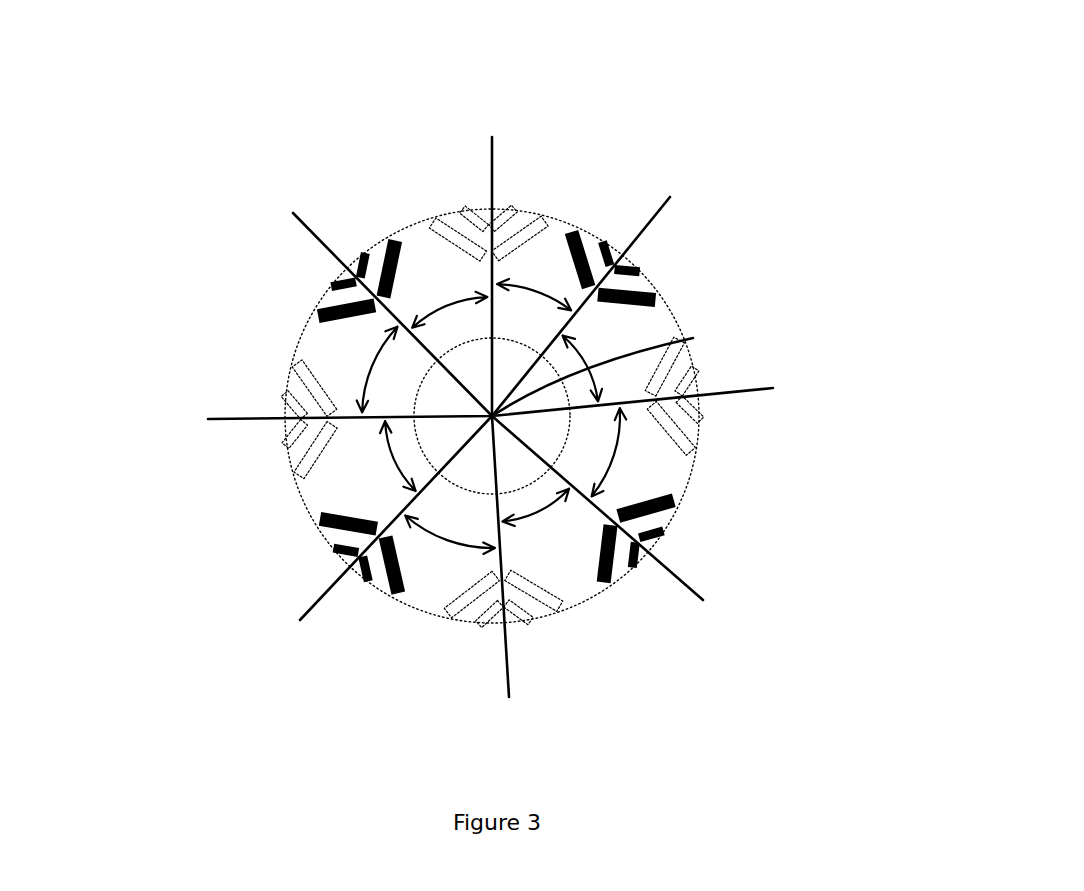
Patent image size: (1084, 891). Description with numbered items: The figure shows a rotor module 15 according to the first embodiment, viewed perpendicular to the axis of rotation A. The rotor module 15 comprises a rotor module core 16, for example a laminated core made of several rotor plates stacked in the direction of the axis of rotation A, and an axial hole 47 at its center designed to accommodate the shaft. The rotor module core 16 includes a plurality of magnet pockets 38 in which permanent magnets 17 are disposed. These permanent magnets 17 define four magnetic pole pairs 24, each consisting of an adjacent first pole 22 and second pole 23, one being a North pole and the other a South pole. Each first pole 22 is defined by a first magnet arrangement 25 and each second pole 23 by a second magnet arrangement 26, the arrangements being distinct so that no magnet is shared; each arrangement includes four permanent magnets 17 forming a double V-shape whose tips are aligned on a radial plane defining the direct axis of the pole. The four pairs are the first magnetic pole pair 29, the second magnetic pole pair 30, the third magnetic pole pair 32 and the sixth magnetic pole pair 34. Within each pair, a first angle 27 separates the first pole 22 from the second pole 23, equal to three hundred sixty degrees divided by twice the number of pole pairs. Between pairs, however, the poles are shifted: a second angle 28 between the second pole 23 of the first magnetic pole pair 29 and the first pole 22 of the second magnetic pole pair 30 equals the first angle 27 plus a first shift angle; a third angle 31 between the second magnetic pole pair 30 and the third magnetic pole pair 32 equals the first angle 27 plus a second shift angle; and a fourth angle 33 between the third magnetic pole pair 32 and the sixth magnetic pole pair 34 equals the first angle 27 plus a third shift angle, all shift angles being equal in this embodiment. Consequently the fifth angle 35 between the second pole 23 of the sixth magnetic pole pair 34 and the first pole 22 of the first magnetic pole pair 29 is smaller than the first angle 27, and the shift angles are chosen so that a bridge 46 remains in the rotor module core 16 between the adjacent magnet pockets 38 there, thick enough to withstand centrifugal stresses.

The rotor module 15 is at (247, 132).
The rotor module core 16 is at (647, 434).
The permanent magnets 17 is at (312, 318).
The first pole 22 is at (508, 179).
The second pole 23 is at (464, 321).
The magnetic pole pairs 24 is at (836, 567).
The first magnet arrangements 25 is at (453, 630).
The second magnet arrangements 26 is at (689, 506).
The first angle 27 is at (453, 348).
The second angle 28 is at (368, 377).
The first magnetic pole pair 29 is at (394, 182).
The second magnetic pole pair 30 is at (257, 524).
The third angle 31 is at (432, 535).
The third magnetic pole pair 32 is at (609, 629).
The fourth angle 33 is at (617, 455).
The sixth magnetic pole pair 34 is at (705, 296).
The fifth angle 35 is at (597, 243).
The magnet pockets 38 is at (316, 317).
The bridge 46 is at (562, 220).
The axial hole 47 is at (395, 243).
The axis of rotation A is at (693, 338).